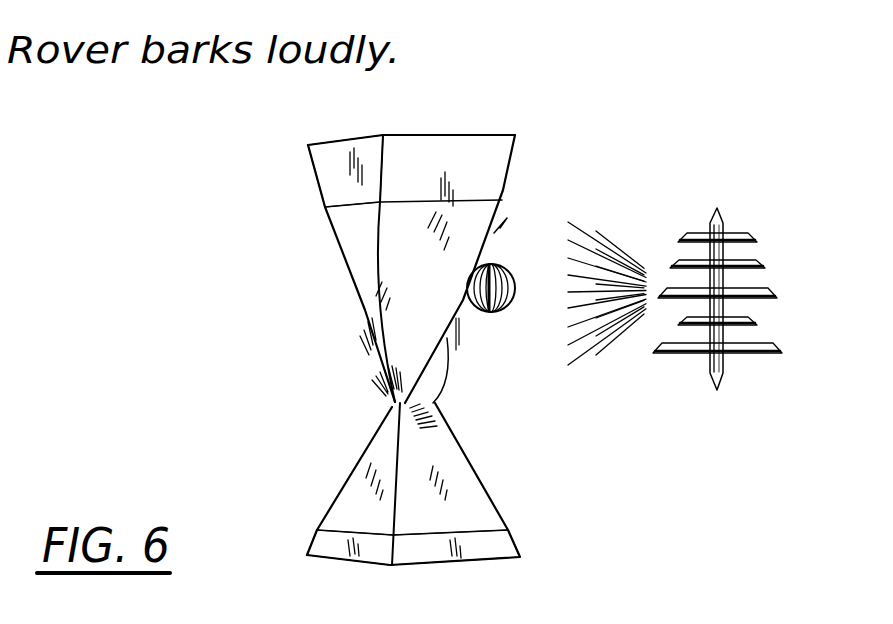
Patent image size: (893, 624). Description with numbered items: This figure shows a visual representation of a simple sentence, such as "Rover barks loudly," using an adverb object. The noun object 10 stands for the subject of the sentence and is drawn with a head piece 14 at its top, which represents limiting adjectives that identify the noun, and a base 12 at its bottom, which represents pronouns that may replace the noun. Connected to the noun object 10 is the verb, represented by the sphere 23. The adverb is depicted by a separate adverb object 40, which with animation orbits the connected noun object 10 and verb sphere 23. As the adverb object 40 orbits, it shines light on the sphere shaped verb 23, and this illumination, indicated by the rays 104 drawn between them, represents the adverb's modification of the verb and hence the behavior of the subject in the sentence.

The noun object 10 is at (542, 142).
The head piece 14 is at (320, 178).
The base 12 is at (515, 545).
The sphere 23 is at (503, 327).
The sound waves 104 is at (612, 222).
The adverb object 40 is at (757, 195).